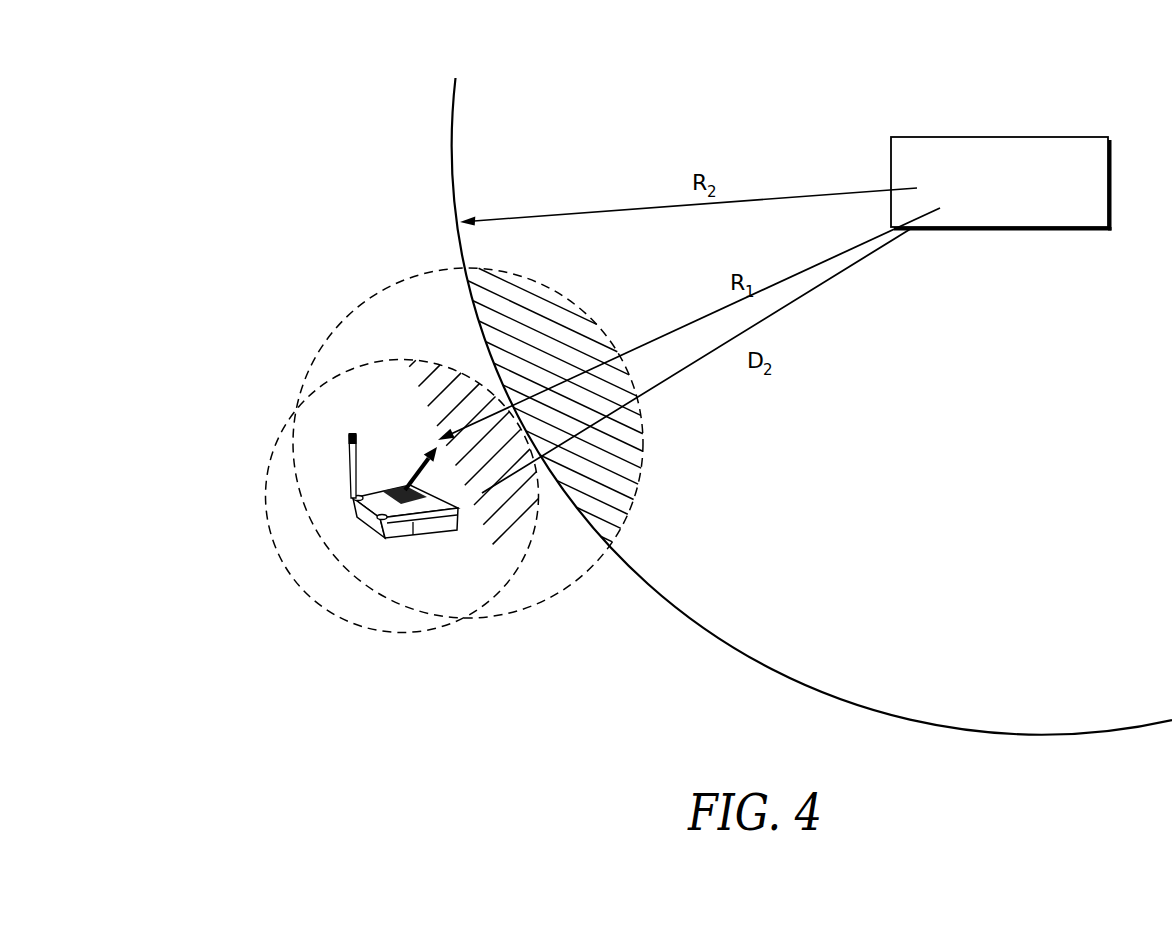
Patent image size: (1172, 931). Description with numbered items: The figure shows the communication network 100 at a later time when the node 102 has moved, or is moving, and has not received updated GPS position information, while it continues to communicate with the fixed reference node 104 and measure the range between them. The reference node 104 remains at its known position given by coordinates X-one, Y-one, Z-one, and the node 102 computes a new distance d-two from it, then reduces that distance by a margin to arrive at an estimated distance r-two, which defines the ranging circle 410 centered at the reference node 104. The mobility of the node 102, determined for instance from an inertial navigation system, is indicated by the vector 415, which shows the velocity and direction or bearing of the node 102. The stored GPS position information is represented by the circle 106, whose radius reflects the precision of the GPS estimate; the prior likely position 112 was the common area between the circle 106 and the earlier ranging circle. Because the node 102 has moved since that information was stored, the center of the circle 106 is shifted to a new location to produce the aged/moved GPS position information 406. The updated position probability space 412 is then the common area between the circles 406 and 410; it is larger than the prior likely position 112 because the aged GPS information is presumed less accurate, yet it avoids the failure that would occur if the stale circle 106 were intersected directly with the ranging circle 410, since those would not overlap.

The communication network 100 is at (197, 122).
The node 102 is at (428, 528).
The reference node 104 is at (1093, 137).
The circle 106 is at (403, 361).
The likely position 112 is at (523, 540).
The aged/moved GPS position information 406 is at (508, 270).
The estimated distance 410 is at (456, 94).
The position probability space 412 is at (644, 452).
The vector 415 is at (414, 476).